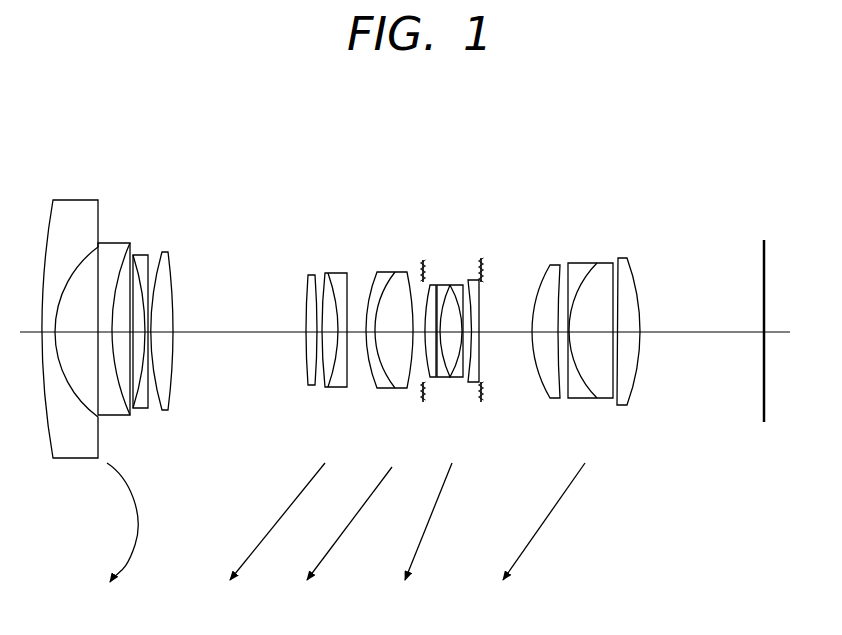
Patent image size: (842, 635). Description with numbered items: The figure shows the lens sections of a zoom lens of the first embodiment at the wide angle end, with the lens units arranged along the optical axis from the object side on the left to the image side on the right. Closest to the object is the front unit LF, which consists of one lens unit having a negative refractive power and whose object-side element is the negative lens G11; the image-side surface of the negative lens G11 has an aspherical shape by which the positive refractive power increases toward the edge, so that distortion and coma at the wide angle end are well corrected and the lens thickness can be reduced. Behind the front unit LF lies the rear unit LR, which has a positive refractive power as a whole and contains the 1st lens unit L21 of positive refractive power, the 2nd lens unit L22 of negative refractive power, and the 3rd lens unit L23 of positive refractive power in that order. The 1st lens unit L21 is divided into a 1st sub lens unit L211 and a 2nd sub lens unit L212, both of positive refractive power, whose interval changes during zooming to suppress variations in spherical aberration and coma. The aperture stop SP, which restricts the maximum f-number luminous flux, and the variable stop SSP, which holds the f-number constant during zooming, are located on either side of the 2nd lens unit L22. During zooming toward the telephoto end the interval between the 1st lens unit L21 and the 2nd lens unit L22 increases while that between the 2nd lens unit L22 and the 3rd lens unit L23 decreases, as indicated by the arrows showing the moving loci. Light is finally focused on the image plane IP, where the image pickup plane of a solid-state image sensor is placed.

The front unit LF is at (169, 193).
The negative lens G11 is at (88, 217).
The rear unit LR is at (638, 117).
The 1st lens unit L21 is at (412, 155).
The 1st sub lens unit L211 is at (347, 193).
The 2nd sub lens unit L212 is at (415, 193).
The 2nd lens unit L22 is at (480, 193).
The 3rd lens unit L23 is at (637, 193).
The aperture stop SP is at (423, 402).
The variable stop SSP is at (482, 402).
The image plane IP is at (767, 278).